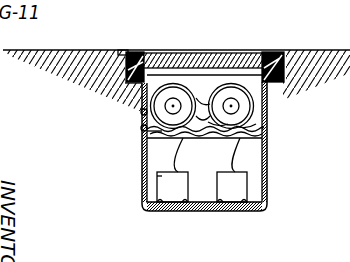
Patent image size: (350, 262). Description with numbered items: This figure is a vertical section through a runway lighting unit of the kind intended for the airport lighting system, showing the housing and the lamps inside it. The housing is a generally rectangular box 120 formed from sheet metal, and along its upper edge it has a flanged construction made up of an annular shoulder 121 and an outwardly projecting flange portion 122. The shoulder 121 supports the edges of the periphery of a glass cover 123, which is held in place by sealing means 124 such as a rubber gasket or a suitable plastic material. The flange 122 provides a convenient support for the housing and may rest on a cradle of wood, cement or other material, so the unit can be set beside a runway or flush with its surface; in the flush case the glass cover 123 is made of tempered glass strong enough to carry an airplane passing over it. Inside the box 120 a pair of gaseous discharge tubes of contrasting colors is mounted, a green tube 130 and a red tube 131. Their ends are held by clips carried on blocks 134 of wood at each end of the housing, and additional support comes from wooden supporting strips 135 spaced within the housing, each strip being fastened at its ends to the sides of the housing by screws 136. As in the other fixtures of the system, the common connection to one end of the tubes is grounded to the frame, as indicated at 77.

The ground connection 77 is at (170, 193).
The rectangular box 120 is at (268, 156).
The annular shoulder 121 is at (127, 88).
The flange portion 122 is at (100, 49).
The glass cover 123 is at (240, 58).
The sealing means 124 is at (135, 51).
The green tube 130 is at (262, 108).
The red tube 131 is at (140, 126).
The blocks 134 is at (155, 178).
The supporting strips 135 is at (160, 134).
The screws 136 is at (141, 134).